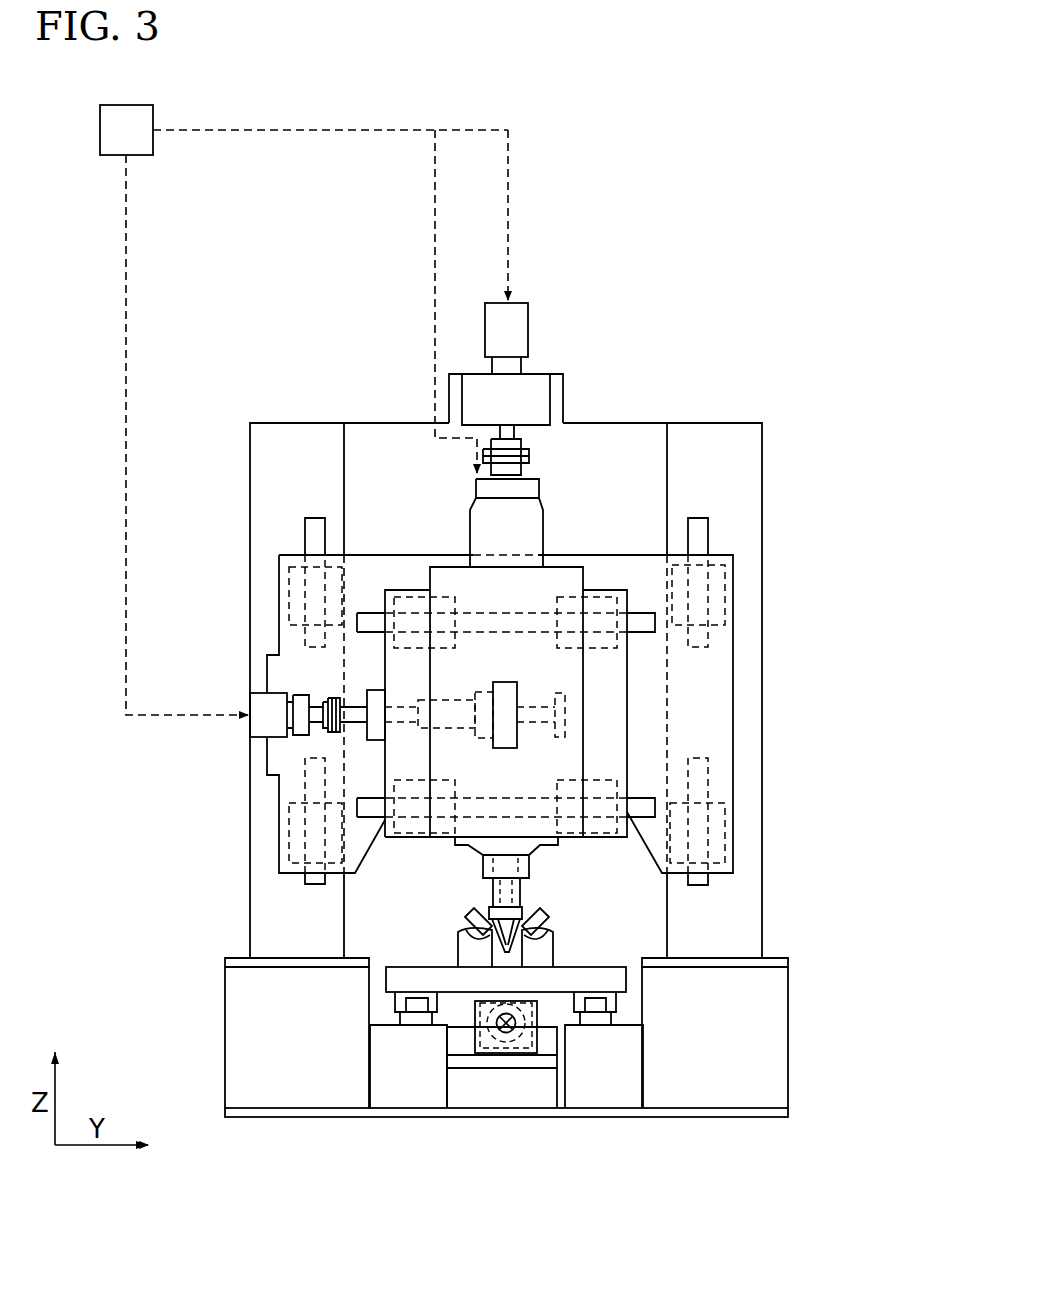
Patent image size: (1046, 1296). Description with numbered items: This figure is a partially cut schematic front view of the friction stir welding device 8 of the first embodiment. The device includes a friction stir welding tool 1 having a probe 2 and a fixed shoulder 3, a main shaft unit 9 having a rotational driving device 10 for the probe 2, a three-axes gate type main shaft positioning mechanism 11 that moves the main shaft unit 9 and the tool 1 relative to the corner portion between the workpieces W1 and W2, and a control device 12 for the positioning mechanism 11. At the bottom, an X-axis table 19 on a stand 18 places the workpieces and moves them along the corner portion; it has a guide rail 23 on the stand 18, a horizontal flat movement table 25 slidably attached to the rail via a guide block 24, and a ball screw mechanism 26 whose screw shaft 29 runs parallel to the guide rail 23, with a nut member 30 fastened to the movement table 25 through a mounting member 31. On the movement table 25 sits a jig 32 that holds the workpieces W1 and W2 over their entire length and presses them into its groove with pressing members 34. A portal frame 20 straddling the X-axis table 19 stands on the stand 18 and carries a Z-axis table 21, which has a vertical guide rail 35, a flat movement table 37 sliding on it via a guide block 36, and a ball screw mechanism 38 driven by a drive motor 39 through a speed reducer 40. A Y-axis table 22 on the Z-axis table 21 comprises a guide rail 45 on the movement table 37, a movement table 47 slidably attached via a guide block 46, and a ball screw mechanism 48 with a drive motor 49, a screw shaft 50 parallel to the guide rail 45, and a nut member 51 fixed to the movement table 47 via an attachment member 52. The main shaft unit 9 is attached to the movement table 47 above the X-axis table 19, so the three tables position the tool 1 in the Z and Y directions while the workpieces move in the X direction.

The friction stir welding tool 1 is at (487, 902).
The probe 2 is at (503, 952).
The fixed shoulder 3 is at (512, 908).
The friction stir welding device 8 is at (364, 252).
The main shaft unit 9 is at (543, 850).
The rotational driving device 10 is at (535, 518).
The main shaft positioning mechanism 11 is at (731, 420).
The control device 12 is at (140, 145).
The stand 18 is at (621, 1093).
The X-axis table 19 is at (629, 958).
The portal frame 20 is at (752, 513).
The Z-axis table 21 is at (297, 533).
The Y-axis table 22 is at (632, 710).
The guide rail 23 is at (415, 1012).
The guide block 24 is at (400, 997).
The movement table 25 is at (400, 973).
The ball screw mechanism 26 is at (473, 1037).
The screw shaft 29 is at (505, 1035).
The nut member 30 is at (495, 1037).
The mounting member 31 is at (557, 1030).
The jig 32 is at (542, 956).
The pressing members 34 is at (473, 938).
The guide rail 35 is at (300, 543).
The guide block 36 is at (289, 590).
The movement table 37 is at (637, 563).
The ball screw mechanism 38 is at (540, 370).
The drive motor 39 is at (522, 290).
The speed reducer 40 is at (473, 387).
The guide rail 45 is at (367, 613).
The guide block 46 is at (403, 593).
The movement table 47 is at (615, 683).
The ball screw mechanism 48 is at (313, 685).
The drive motor 49 is at (252, 737).
The screw shaft 50 is at (358, 722).
The nut member 51 is at (465, 703).
The attachment member 52 is at (515, 682).
The workpiece W1 is at (460, 930).
The workpiece W2 is at (595, 933).